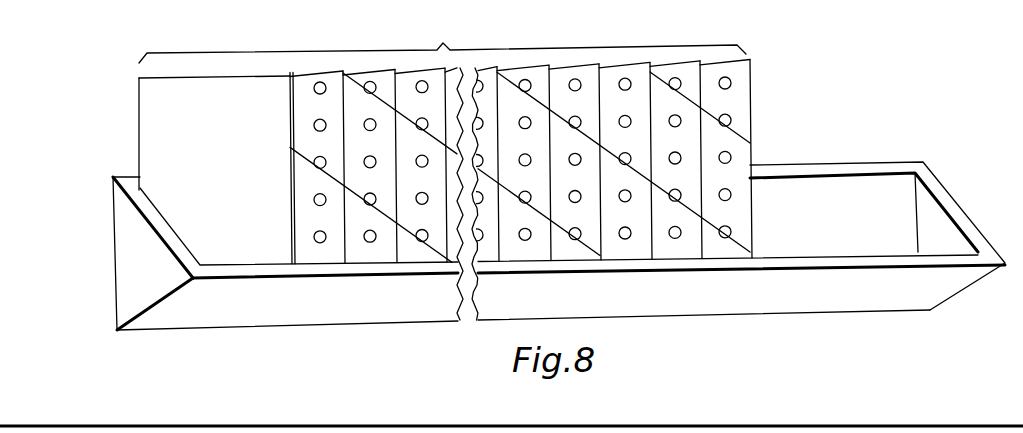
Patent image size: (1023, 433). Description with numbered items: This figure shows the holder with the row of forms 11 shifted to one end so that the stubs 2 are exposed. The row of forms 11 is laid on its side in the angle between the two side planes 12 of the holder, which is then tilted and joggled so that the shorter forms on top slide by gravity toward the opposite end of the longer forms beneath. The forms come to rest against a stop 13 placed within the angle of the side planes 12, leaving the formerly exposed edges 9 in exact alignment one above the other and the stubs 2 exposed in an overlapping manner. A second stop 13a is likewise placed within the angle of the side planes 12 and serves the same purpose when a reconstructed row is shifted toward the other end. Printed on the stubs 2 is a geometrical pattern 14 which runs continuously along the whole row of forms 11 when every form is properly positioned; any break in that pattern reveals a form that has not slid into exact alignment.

The stubs 2 is at (708, 77).
The exposed edges 9 is at (139, 78).
The row of forms 11 is at (465, 165).
The planes of the holder 12 is at (882, 260).
The stop 13 is at (167, 210).
The stop 13a is at (935, 192).
The geometrical pattern 14 is at (355, 190).